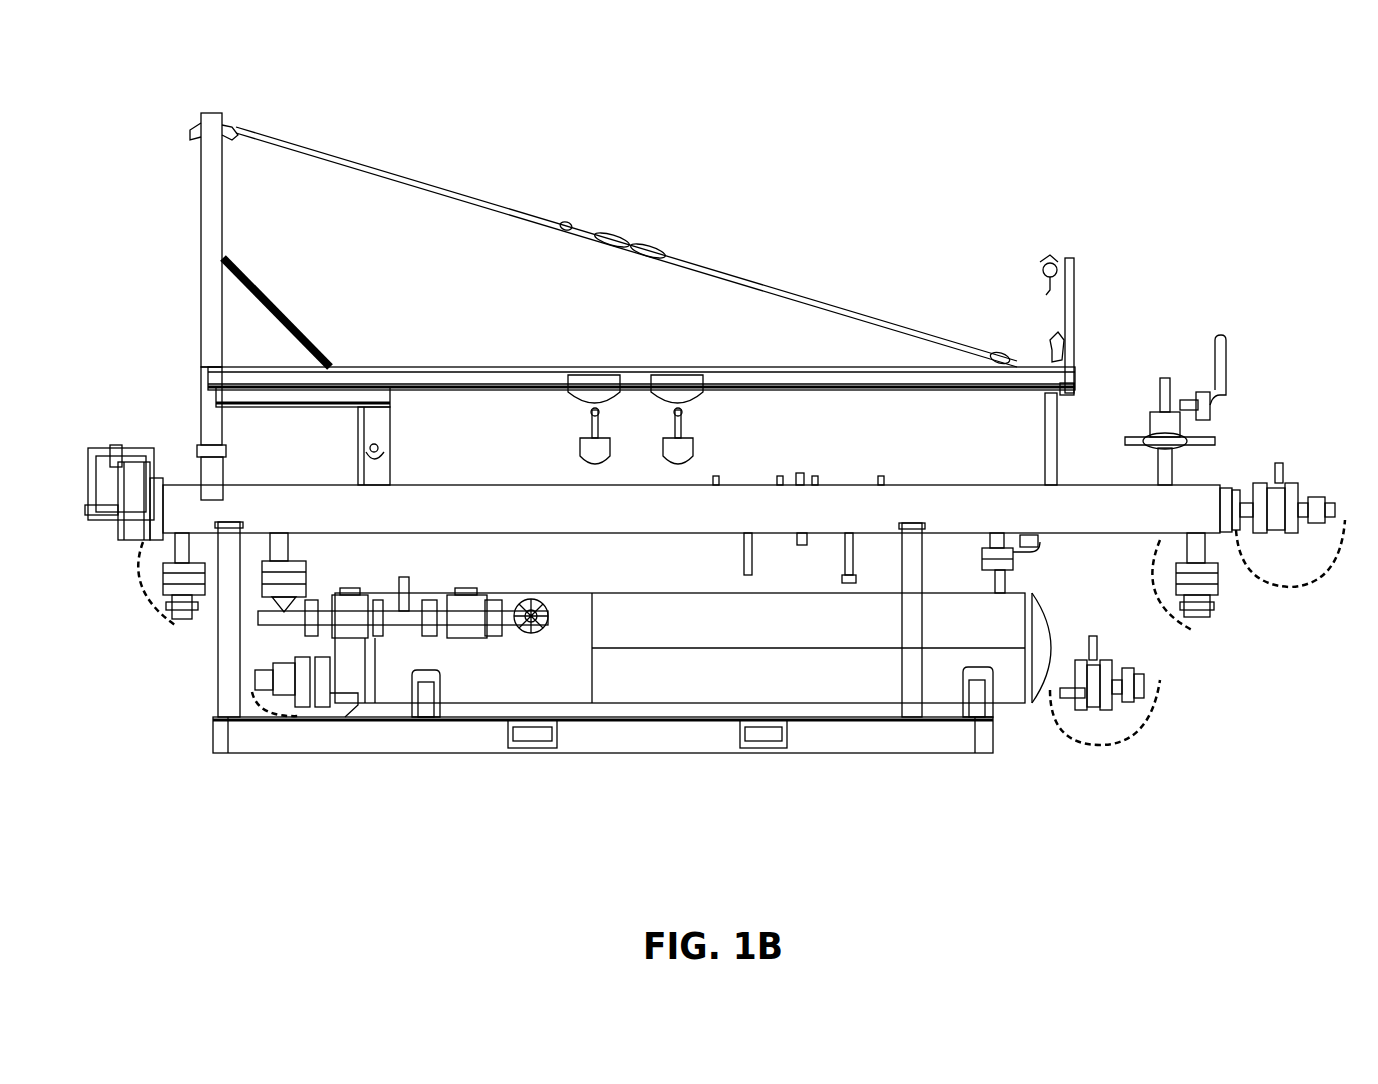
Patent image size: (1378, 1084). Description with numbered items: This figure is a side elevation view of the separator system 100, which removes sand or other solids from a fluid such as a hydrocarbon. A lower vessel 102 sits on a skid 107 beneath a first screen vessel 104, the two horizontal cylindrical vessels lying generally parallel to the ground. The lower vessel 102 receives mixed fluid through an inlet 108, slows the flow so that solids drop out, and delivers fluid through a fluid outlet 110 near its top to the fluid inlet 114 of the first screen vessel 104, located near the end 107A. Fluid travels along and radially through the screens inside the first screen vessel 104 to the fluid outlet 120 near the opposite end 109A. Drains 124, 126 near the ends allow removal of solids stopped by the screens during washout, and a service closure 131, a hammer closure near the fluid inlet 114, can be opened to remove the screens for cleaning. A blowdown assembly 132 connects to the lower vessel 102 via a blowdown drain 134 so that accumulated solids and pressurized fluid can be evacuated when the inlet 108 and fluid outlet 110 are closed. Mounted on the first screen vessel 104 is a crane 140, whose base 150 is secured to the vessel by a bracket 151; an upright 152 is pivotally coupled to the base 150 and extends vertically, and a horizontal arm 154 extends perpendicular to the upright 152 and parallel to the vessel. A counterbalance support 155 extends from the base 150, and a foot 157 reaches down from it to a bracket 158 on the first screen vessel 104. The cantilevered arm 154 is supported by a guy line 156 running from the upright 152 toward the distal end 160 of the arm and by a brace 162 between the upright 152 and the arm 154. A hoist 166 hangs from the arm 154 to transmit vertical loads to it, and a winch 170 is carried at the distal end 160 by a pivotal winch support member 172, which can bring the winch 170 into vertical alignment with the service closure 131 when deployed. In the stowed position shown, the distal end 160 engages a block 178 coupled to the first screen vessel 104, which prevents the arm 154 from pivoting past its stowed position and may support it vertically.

The separator system 100 is at (985, 70).
The crane 140 is at (600, 147).
The lower vessel 102 is at (680, 680).
The first screen vessel 104 is at (845, 493).
The skid 107 is at (877, 740).
The end of first screen vessel 107A is at (158, 445).
The inlet 108 is at (1140, 675).
The end of first screen vessel 109A is at (1222, 490).
The fluid outlet 110 is at (520, 600).
The fluid inlet 114 is at (290, 545).
The fluid outlet 120 is at (1310, 490).
The drain 124 is at (1225, 580).
The drain 126 is at (190, 612).
The service closure 131 is at (140, 445).
The blowdown assembly 132 is at (297, 712).
The blowdown drain 134 is at (270, 663).
The base 150 is at (222, 430).
The bracket 151 is at (212, 474).
The upright 152 is at (203, 210).
The arm 154 is at (500, 366).
The counterbalance support 155 is at (316, 398).
The guy line 156 is at (385, 175).
The foot 157 is at (390, 428).
The bracket 158 is at (392, 462).
The distal end of the arm 160 is at (1072, 388).
The brace 162 is at (278, 300).
The hoist 166 is at (572, 396).
The winch 170 is at (1046, 262).
The winch support member 172 is at (1075, 306).
The block 178 is at (1045, 432).